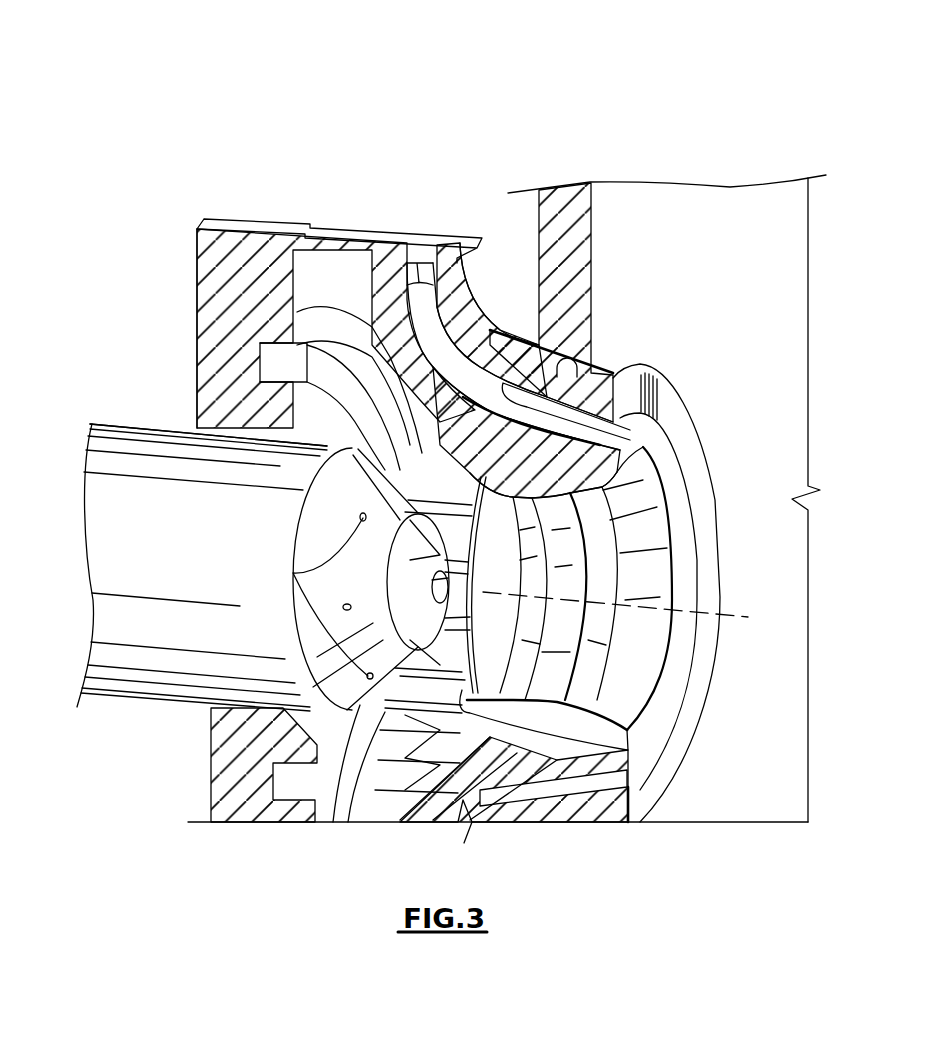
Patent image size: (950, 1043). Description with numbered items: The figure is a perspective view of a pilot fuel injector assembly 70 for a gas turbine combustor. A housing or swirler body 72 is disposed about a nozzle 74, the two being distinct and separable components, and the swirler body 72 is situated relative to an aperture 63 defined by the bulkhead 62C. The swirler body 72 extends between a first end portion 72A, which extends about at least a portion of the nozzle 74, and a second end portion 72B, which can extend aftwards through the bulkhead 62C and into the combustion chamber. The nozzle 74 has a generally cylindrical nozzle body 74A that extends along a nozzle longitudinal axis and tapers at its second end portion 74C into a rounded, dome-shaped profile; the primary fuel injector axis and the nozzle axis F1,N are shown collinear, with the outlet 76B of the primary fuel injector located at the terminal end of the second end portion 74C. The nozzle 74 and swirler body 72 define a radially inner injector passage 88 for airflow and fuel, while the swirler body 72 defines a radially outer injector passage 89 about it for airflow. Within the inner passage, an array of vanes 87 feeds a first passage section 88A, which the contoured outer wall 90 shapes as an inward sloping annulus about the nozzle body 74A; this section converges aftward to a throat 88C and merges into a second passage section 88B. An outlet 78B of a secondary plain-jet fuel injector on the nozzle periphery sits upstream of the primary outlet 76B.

The pilot fuel injector assembly 70 is at (90, 80).
The swirler body 72 is at (220, 215).
The first end portion 72A is at (205, 266).
The second end portion 72B is at (670, 400).
The nozzle 74 is at (114, 420).
The nozzle body 74A is at (188, 440).
The second end portion 74C is at (325, 531).
The outlet 78B is at (293, 573).
The array of vanes 87 is at (336, 222).
The first injector passage 88 is at (520, 577).
The first passage section 88A is at (432, 448).
The second passage section 88B is at (547, 497).
The throat 88C is at (513, 497).
The second injector passage 89 is at (480, 367).
The outer wall 90 is at (375, 428).
The aperture 63 is at (577, 363).
The bulkhead 62C is at (790, 226).
The outlet 76B is at (470, 713).
The first fuel injector axis and nozzle longitudinal axis F1,N is at (710, 613).